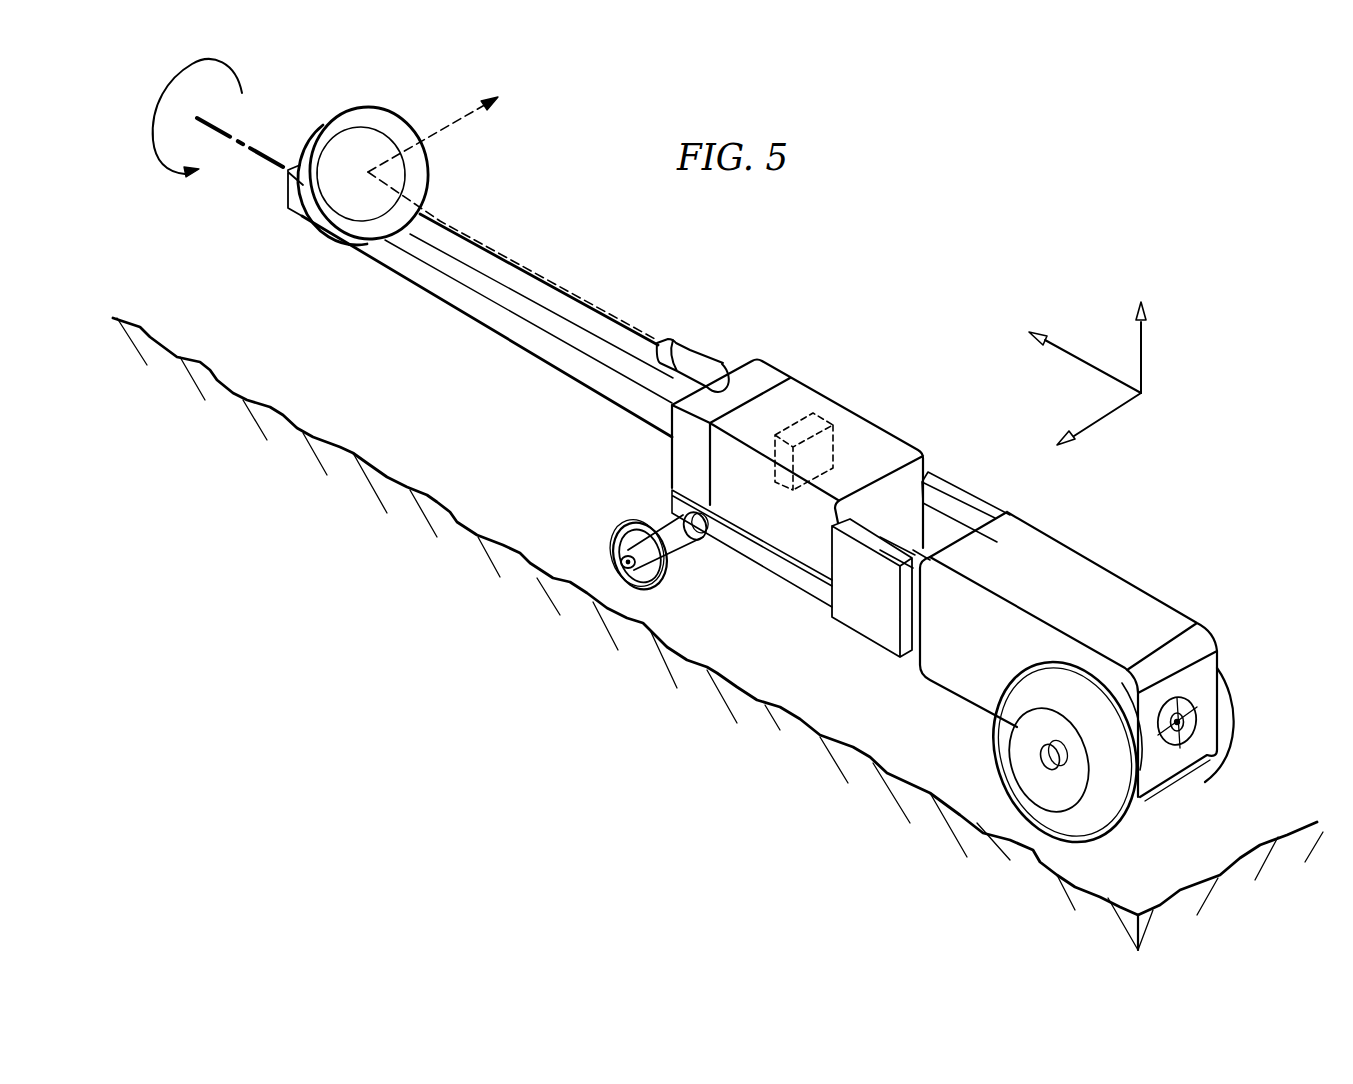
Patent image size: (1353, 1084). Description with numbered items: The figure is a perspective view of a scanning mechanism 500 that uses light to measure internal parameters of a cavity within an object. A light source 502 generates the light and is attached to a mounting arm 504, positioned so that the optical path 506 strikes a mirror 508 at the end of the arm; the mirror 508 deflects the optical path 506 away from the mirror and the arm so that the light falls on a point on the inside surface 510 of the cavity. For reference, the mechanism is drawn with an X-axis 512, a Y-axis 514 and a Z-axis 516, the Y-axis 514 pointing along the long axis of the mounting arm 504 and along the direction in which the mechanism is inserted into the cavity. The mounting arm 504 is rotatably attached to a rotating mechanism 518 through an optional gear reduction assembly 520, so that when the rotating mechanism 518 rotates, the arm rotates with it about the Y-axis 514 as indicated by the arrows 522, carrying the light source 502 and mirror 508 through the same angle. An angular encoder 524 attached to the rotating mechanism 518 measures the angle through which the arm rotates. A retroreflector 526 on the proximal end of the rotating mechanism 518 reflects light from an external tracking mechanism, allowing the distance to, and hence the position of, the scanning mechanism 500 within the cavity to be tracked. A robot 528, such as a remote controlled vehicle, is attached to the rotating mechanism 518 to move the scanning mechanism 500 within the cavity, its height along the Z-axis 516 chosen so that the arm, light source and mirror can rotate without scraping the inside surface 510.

The scanning mechanism 500 is at (928, 265).
The light source 502 is at (708, 353).
The mounting arm 504 is at (482, 325).
The optical path 506 is at (496, 246).
The mirror 508 is at (376, 115).
The inside surface 510 is at (327, 389).
The X-axis 512 is at (1108, 418).
The Y-axis 514 is at (1065, 358).
The Z-axis 516 is at (1143, 342).
The rotating mechanism 518 is at (893, 452).
The gear reduction assembly 520 is at (778, 378).
The arrows 522 is at (154, 136).
The angular encoder 524 is at (820, 417).
The retroreflector 526 is at (1183, 735).
The robot 528 is at (1127, 590).